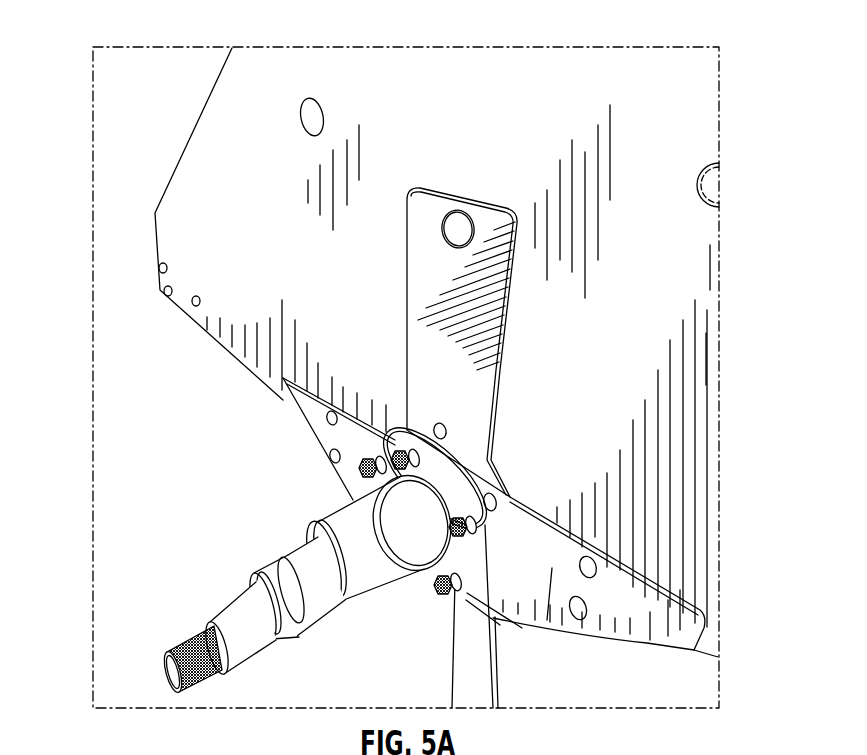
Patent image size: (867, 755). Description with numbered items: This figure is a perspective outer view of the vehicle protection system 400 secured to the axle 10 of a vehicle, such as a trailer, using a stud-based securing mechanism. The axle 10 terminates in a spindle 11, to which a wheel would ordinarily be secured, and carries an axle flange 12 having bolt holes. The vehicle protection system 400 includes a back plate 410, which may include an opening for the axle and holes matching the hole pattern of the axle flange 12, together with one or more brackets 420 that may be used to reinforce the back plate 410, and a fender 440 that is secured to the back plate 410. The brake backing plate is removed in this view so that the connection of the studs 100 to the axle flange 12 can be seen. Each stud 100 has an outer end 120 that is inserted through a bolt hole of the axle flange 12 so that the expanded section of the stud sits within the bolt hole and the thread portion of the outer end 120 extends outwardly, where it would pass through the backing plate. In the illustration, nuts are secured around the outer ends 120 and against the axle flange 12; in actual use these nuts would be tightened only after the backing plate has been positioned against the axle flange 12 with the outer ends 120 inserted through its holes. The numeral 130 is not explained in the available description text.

The vehicle protection system 400 is at (652, 30).
The fender 440 is at (150, 228).
The back plate 410 is at (705, 342).
The bracket 420 is at (470, 604).
The axle flange 12 is at (494, 452).
The flange ring 130 is at (450, 475).
The outer end 120 is at (410, 452).
The stud 100 is at (360, 456).
The axle 10 is at (360, 503).
The spindle 11 is at (290, 564).